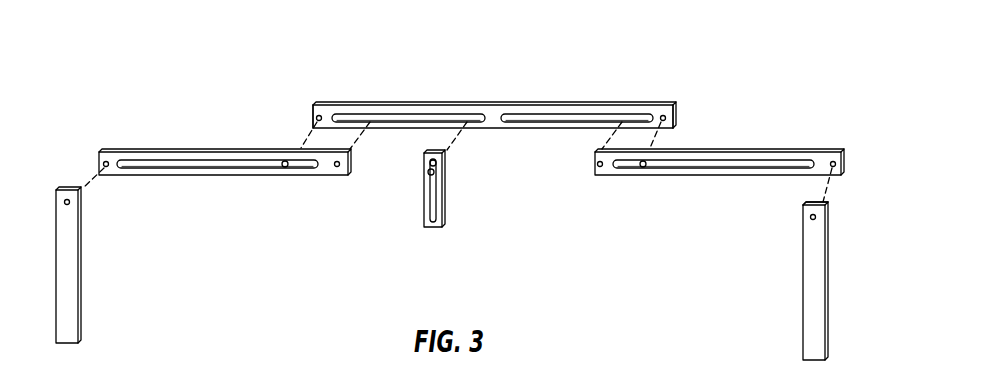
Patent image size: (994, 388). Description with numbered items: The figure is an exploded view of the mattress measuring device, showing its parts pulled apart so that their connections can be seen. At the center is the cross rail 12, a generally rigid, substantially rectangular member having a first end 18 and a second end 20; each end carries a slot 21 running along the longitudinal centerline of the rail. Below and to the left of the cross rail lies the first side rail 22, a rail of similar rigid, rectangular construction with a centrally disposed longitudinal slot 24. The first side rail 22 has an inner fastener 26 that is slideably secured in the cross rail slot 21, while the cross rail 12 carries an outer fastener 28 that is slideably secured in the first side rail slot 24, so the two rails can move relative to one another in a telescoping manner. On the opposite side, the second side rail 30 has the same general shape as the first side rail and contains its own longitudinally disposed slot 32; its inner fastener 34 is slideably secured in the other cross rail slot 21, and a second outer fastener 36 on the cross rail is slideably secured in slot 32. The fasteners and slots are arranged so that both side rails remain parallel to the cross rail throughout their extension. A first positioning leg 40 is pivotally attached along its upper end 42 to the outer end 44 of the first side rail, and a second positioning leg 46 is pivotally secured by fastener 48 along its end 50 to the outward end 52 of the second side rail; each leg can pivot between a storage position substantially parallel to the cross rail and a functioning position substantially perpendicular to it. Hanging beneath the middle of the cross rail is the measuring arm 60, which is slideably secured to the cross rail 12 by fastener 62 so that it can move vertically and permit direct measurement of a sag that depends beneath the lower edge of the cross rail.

The cross rail 12 is at (459, 72).
The first end 18 is at (312, 108).
The second end 20 is at (677, 110).
The slot 21 is at (386, 115).
The first side rail 22 is at (153, 122).
The longitudinal slot 24 is at (220, 166).
The inner fastener 26 is at (337, 168).
The outer fastener 28 is at (320, 114).
The second side rail 30 is at (728, 125).
The slot 32 is at (702, 167).
The inner fastener 34 is at (597, 165).
The second outer fastener 36 is at (663, 113).
The first positioning leg 40 is at (100, 285).
The upper end 42 is at (82, 210).
The outer end 44 is at (109, 150).
The second positioning leg 46 is at (783, 315).
The fastener 48 is at (813, 222).
The end 50 is at (805, 204).
The outward end 52 is at (833, 160).
The measuring arm 60 is at (460, 206).
The fastener 62 is at (436, 172).